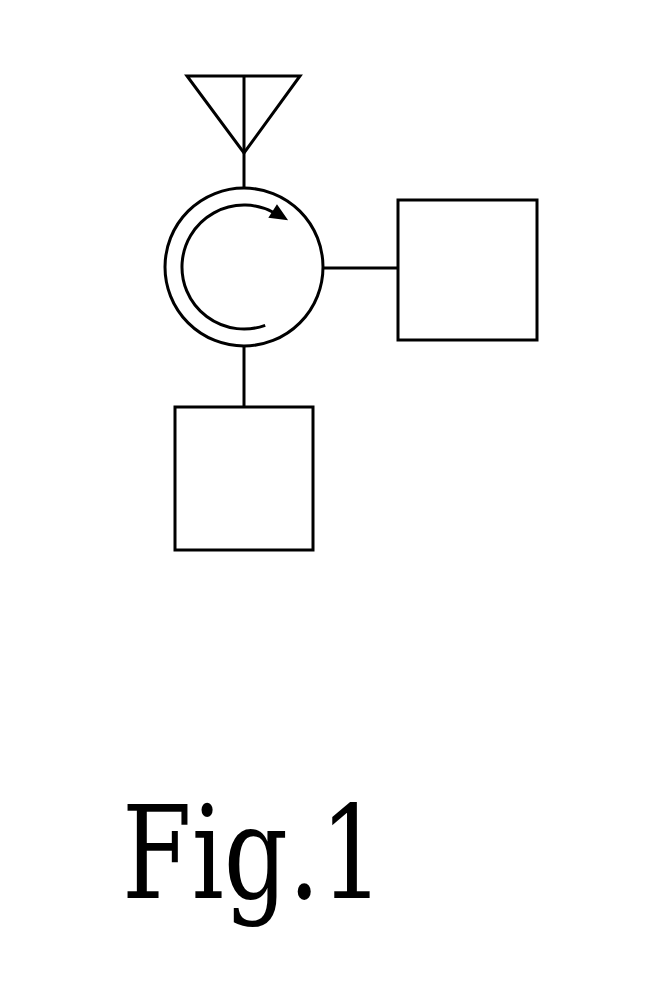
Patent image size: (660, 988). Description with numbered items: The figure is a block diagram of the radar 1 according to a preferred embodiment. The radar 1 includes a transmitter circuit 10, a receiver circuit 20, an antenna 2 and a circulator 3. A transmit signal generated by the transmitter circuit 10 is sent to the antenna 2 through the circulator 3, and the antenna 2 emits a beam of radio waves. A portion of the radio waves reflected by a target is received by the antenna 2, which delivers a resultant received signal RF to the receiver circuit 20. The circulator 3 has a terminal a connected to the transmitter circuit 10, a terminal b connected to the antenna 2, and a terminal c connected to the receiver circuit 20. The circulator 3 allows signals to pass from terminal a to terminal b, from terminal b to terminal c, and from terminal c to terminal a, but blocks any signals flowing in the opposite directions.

The radar 1 is at (530, 606).
The antenna 2 is at (213, 98).
The circulator 3 is at (165, 283).
The transmitter circuit 10 is at (201, 478).
The receiver circuit 20 is at (514, 270).